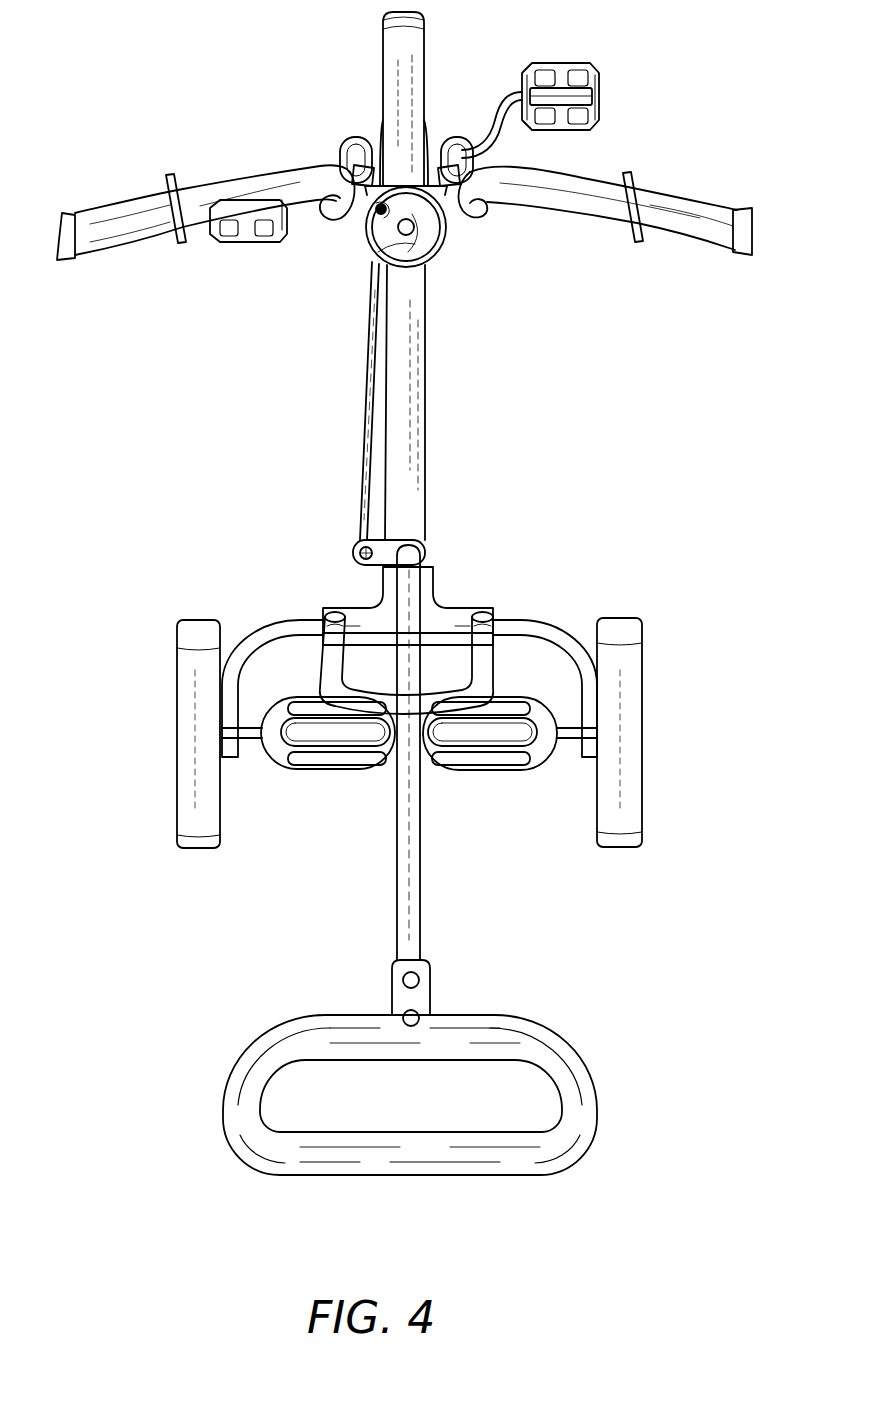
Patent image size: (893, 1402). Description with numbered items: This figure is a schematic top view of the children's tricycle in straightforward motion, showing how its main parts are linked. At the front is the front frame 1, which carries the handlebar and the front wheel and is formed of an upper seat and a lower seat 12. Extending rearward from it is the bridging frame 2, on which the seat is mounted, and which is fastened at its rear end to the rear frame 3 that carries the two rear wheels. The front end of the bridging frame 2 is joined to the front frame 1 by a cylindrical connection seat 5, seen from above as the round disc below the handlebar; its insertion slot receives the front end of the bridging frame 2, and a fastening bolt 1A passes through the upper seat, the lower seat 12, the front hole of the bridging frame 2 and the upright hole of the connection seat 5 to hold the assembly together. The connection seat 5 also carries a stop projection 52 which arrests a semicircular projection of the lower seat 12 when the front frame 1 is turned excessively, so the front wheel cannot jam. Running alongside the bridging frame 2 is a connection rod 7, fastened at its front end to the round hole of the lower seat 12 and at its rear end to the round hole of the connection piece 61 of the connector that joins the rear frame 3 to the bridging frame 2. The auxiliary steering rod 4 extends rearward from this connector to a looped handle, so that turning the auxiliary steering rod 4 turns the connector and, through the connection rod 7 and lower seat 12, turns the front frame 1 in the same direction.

The front frame 1 is at (701, 191).
The fastening bolt 1A is at (398, 233).
The lower seat 12 is at (428, 242).
The connection seat 5 is at (431, 249).
The stop projection 52 is at (375, 283).
The bridging frame 2 is at (412, 438).
The connection rod 7 is at (366, 470).
The connection piece 61 is at (352, 553).
The rear frame 3 is at (540, 615).
The auxiliary steering rod 4 is at (410, 862).